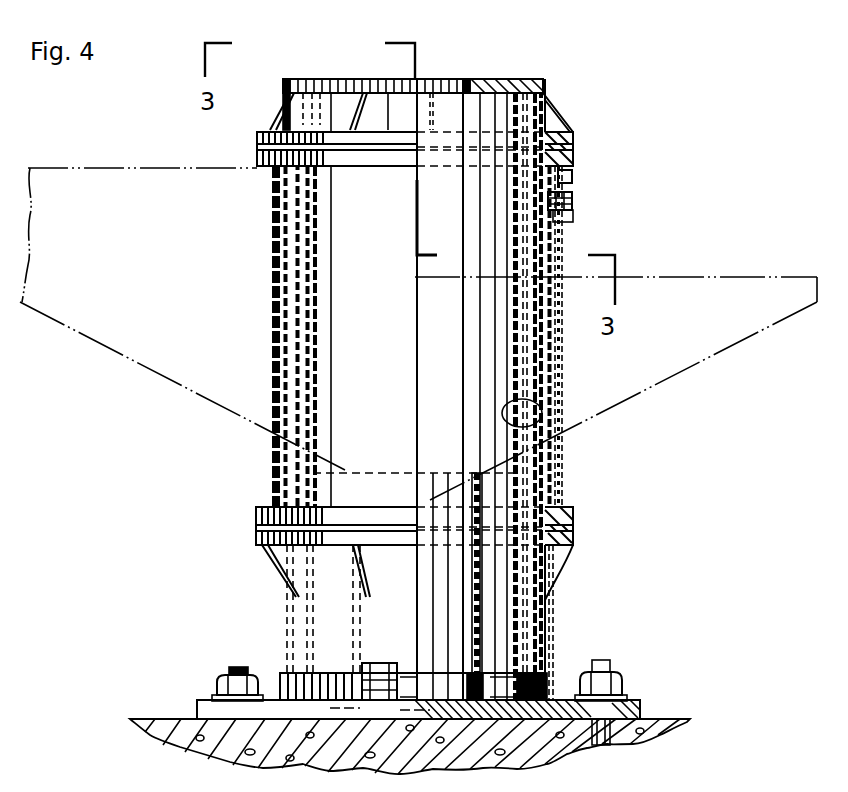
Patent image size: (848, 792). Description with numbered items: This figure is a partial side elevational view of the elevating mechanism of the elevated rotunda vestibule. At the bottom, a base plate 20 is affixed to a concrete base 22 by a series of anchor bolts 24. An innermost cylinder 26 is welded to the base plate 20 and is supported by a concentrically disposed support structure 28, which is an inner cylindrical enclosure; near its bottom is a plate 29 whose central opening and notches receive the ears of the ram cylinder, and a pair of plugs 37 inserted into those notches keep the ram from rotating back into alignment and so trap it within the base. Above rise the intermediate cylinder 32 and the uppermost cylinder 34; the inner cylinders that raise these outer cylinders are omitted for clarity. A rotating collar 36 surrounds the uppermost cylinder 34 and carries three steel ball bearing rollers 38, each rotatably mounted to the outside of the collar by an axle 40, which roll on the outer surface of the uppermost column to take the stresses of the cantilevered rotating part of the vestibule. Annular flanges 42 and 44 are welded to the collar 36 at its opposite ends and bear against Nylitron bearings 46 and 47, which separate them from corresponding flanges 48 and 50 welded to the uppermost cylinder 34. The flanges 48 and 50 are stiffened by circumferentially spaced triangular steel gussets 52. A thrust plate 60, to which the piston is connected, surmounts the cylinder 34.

The base plate 20 is at (197, 700).
The concrete base 22 is at (150, 720).
The anchor bolts 24 is at (232, 668).
The innermost cylinder 26 is at (545, 404).
The support structure 28 is at (482, 622).
The plate 29 is at (549, 586).
The intermediate cylinder 32 is at (540, 380).
The uppermost cylinder 34 is at (545, 352).
The rotating collar 36 is at (563, 236).
The plugs 37 is at (433, 108).
The steel ball bearing rollers 38 is at (573, 201).
The axle 40 is at (572, 179).
The annular flange 42 is at (257, 163).
The annular flange 44 is at (257, 510).
The Nylitron bearing 46 is at (257, 145).
The Nylitron bearing 47 is at (257, 527).
The flange 48 is at (257, 136).
The flange 50 is at (257, 538).
The triangular steel gussets 52 is at (353, 100).
The thrust plate 60 is at (480, 80).